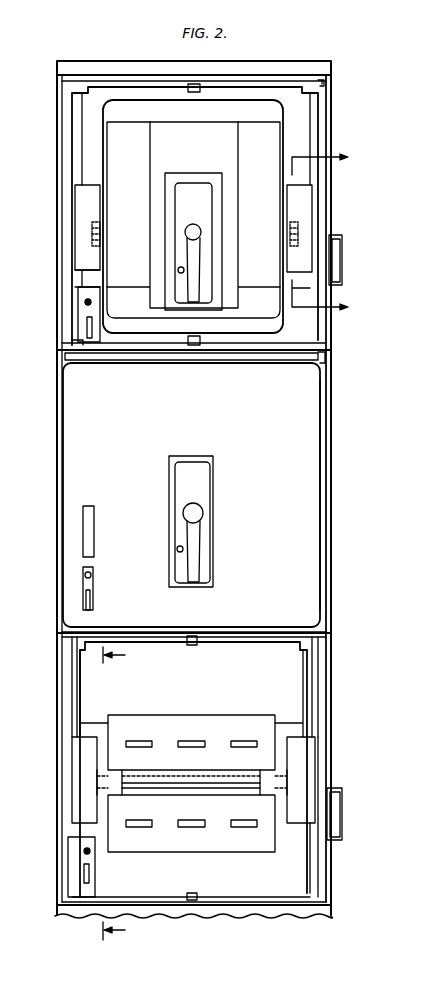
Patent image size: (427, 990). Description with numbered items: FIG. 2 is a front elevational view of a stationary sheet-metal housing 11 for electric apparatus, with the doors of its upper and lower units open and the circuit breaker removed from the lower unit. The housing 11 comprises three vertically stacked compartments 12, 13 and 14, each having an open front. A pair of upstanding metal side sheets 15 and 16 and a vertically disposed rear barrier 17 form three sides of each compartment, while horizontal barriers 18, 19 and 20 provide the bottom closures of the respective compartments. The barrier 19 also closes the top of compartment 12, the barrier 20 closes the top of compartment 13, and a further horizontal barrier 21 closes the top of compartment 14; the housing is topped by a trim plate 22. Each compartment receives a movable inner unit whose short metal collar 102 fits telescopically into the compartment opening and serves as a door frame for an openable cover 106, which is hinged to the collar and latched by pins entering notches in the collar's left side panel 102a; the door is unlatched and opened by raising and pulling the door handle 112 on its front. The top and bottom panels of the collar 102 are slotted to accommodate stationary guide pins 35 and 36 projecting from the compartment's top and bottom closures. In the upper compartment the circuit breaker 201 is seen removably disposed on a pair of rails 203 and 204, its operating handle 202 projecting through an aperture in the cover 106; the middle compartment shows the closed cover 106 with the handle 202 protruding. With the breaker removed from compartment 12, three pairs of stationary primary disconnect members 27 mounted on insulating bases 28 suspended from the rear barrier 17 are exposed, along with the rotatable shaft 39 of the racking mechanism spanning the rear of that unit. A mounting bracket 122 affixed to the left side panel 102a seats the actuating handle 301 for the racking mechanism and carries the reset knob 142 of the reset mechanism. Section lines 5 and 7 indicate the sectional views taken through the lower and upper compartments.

The housing 11 is at (46, 591).
The compartment 12 is at (278, 885).
The compartment 13 is at (301, 590).
The compartment 14 is at (301, 327).
The side sheet 15 is at (60, 410).
The side sheet 16 is at (331, 416).
The rear barrier 17 is at (300, 677).
The bottom barrier 18 is at (228, 906).
The barrier 19 is at (245, 632).
The barrier 20 is at (326, 357).
The top barrier 21 is at (326, 83).
The trim plate 22 is at (298, 70).
The stationary primary disconnect members 27 is at (152, 741).
The insulating bases 28 is at (123, 715).
The guide pin 35 is at (193, 92).
The guide pin 36 is at (196, 336).
The shaft 39 is at (214, 775).
The section line 5- 5 is at (120, 793).
The section line 7- 7 is at (325, 232).
The collar 102 is at (124, 88).
The left side panel 102a is at (72, 127).
The cover 106 is at (322, 125).
The door handle 112 is at (342, 250).
The mounting bracket 122 is at (78, 328).
The reset knob 142 is at (91, 302).
The circuit breaker 201 is at (103, 157).
The operating handle 202 is at (197, 254).
The rail 203 is at (102, 242).
The rail 204 is at (288, 222).
The actuating handle 301 is at (89, 338).